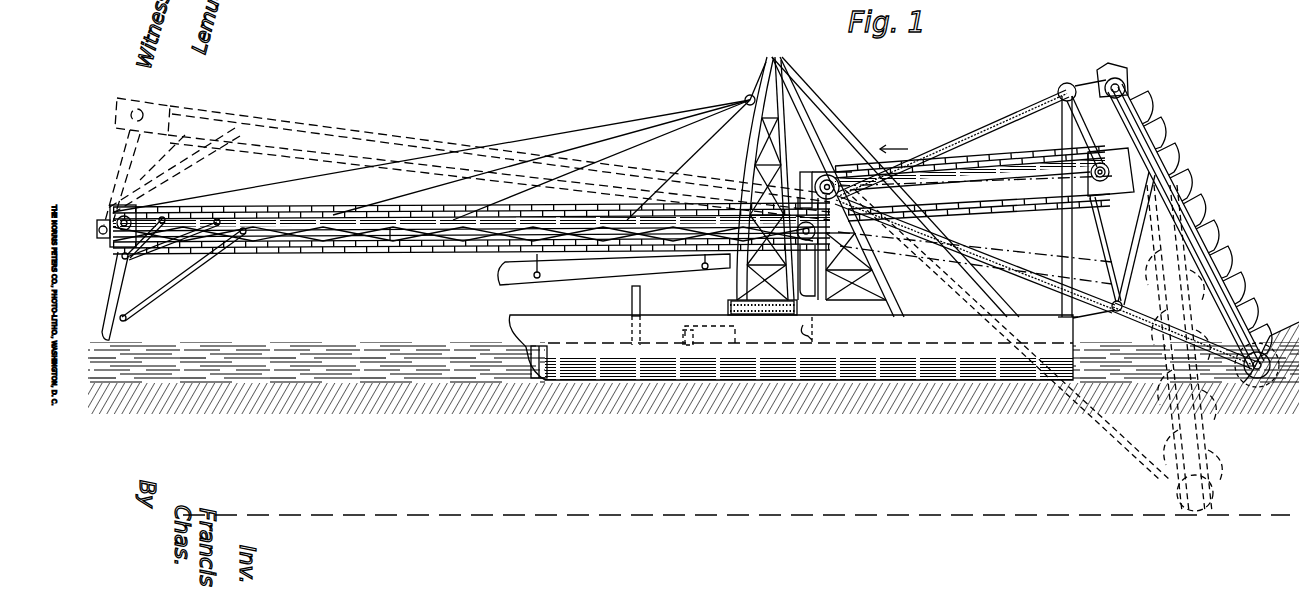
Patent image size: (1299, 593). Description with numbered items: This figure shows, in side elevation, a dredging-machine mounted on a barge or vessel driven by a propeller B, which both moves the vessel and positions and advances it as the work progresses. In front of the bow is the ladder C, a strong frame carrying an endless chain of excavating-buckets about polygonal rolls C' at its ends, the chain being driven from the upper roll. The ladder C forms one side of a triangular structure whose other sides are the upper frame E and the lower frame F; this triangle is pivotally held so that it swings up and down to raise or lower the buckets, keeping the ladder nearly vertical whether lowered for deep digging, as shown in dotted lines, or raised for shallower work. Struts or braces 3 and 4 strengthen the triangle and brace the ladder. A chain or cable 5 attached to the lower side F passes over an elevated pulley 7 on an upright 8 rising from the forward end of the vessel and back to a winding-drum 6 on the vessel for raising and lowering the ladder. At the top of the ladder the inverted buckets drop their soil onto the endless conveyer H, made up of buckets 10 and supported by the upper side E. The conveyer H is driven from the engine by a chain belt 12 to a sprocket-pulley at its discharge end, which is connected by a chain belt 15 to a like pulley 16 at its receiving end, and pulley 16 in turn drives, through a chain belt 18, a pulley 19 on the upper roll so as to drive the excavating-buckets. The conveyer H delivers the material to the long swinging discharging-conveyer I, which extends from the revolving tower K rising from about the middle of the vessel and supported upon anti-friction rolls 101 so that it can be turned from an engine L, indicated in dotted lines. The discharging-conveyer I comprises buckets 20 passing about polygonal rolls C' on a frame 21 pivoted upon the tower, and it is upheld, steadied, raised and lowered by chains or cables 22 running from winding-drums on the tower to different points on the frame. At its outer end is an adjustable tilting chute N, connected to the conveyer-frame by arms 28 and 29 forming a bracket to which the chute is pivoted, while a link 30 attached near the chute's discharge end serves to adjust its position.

The strut or brace 3 is at (1136, 234).
The strut or brace 4 is at (1030, 114).
The chain or cable 5 is at (1106, 232).
The winding-drum 6 is at (799, 331).
The elevated pulley 7 is at (1067, 192).
The upright 8 is at (1080, 312).
The buckets 10 is at (1012, 152).
The chain belt 12 is at (820, 250).
The chain belt 15 is at (985, 176).
The pulley 16 is at (1090, 182).
The chain belt 18 is at (1086, 123).
The pulley 19 is at (1125, 78).
The buckets 20 is at (588, 252).
The frame 21 is at (392, 228).
The chains or cables 22 is at (439, 141).
The arm 28 is at (121, 239).
The arm 29 is at (176, 240).
The link 30 is at (188, 276).
The anti-friction rolls 101 is at (766, 316).
The propeller B is at (515, 320).
The ladder C is at (1062, 298).
The polygonal rolls C' is at (96, 238).
The frame E is at (973, 201).
The frame F is at (1030, 300).
The endless conveyer H is at (870, 168).
The discharging-conveyer I is at (463, 222).
The revolving tower K is at (769, 186).
The engine L is at (652, 343).
The tilting chute N is at (122, 295).